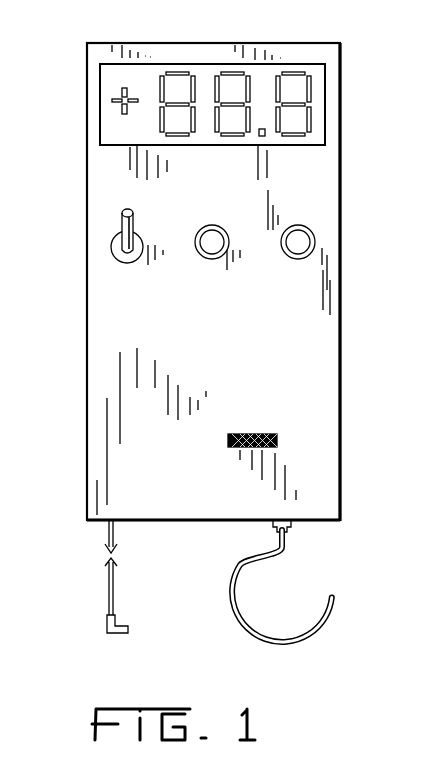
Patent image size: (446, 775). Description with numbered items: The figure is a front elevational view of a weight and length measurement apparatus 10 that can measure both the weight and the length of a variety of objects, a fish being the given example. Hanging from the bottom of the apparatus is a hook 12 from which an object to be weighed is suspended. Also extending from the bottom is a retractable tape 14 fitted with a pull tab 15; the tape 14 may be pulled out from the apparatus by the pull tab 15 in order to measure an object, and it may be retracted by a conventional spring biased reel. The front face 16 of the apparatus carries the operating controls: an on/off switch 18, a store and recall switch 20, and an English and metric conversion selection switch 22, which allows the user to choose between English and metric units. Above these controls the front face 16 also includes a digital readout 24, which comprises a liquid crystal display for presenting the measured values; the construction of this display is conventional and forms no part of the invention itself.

The weight and length measurement apparatus 10 is at (348, 128).
The hook 12 is at (257, 561).
The retractable tape 14 is at (114, 592).
The pull tab 15 is at (107, 620).
The front face 16 is at (290, 386).
The on/off switch 18 is at (314, 239).
The store and recall switch 20 is at (196, 246).
The English and metric conversion selection switch 22 is at (112, 250).
The digital readout 24 is at (318, 80).